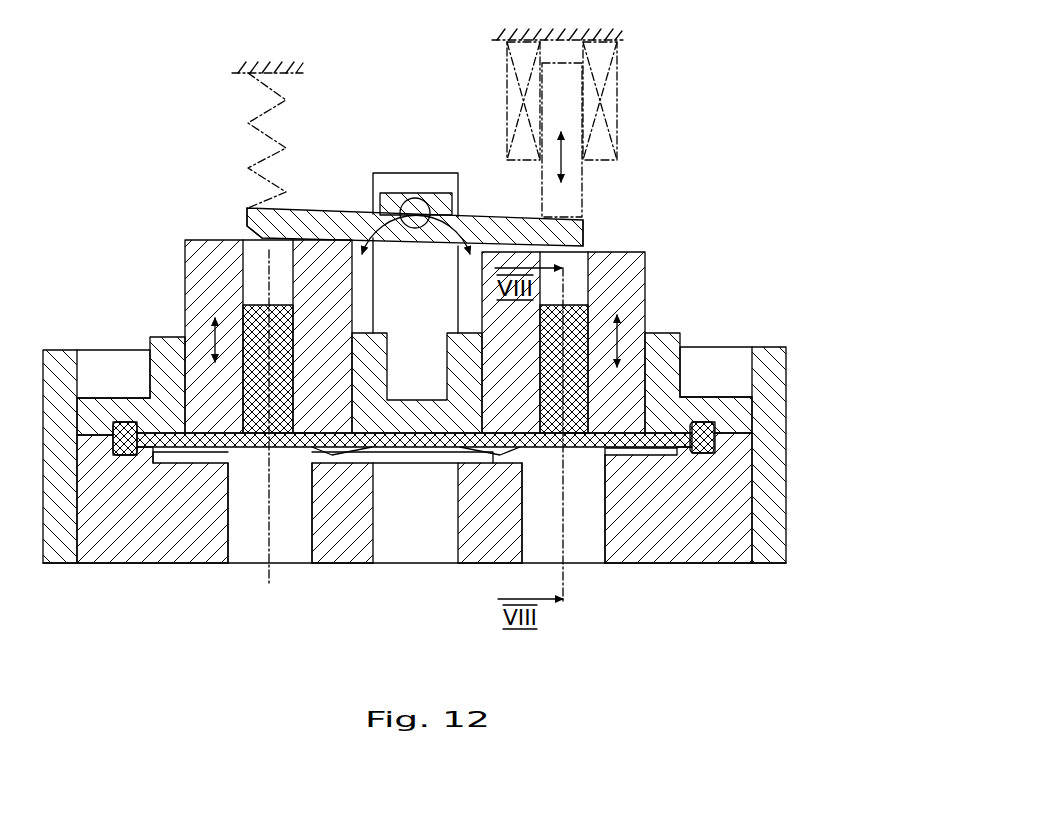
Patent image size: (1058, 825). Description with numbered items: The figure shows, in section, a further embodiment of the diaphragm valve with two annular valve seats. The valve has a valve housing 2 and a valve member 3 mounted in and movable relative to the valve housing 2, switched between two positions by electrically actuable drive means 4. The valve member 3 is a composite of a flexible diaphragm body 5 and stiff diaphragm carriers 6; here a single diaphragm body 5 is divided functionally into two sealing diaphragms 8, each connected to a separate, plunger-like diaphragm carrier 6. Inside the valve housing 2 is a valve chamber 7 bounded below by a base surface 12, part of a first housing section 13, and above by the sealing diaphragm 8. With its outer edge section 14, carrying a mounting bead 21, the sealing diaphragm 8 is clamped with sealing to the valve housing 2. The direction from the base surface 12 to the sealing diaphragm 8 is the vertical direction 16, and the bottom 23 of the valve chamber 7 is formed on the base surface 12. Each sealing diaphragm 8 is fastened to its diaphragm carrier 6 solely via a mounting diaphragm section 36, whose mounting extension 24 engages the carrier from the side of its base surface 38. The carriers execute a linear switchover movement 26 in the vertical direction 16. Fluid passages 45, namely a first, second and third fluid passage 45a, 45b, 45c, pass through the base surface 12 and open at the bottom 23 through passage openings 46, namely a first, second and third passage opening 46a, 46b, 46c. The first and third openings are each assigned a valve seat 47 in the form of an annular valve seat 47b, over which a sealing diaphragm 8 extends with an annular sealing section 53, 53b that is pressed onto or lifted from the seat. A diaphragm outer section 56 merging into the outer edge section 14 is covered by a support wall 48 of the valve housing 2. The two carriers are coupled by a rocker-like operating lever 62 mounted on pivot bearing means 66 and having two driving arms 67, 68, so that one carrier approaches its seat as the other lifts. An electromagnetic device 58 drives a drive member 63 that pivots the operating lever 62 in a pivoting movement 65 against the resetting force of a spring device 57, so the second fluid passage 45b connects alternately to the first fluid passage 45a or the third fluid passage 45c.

The valve housing 2 is at (303, 73).
The valve member 3 is at (426, 273).
The drive means 4 is at (622, 122).
The diaphragm body 5 is at (396, 430).
The diaphragm carrier 6 is at (203, 255).
The valve chamber 7 is at (428, 458).
The sealing diaphragm 8 is at (228, 448).
The base surface 12 is at (414, 440).
The first housing section 13 is at (414, 440).
The outer edge section 14 is at (498, 438).
The vertical direction 16 is at (270, 580).
The mounting bead 21 is at (720, 441).
The bottom 23 is at (140, 458).
The mounting extension 24 is at (563, 328).
The switchover movement 26 is at (212, 325).
The mounting diaphragm section 36 is at (300, 434).
The base surface of the diaphragm carrier 38 is at (305, 455).
The fluid passage 45 is at (441, 440).
The first fluid passage 45a is at (587, 543).
The second fluid passage 45b is at (440, 543).
The third fluid passage 45c is at (395, 440).
The passage opening 46 is at (414, 522).
The first passage opening 46a is at (697, 490).
The second passage opening 46b is at (373, 537).
The third passage opening 46c is at (217, 537).
The valve seat 47 is at (435, 487).
The annular valve seat 47b is at (222, 462).
The support wall 48 is at (170, 428).
The sealing section 53 is at (414, 363).
The annular sealing section 53b is at (150, 337).
The diaphragm outer section 56 is at (113, 423).
The spring device 57 is at (257, 140).
The electromagnetic device 58 is at (608, 107).
The operating lever 62 is at (332, 208).
The drive member 63 is at (575, 185).
The pivoting movement 65 is at (455, 173).
The pivot bearing means 66 is at (393, 192).
The driving arm 67 is at (583, 233).
The driving arm 68 is at (245, 226).